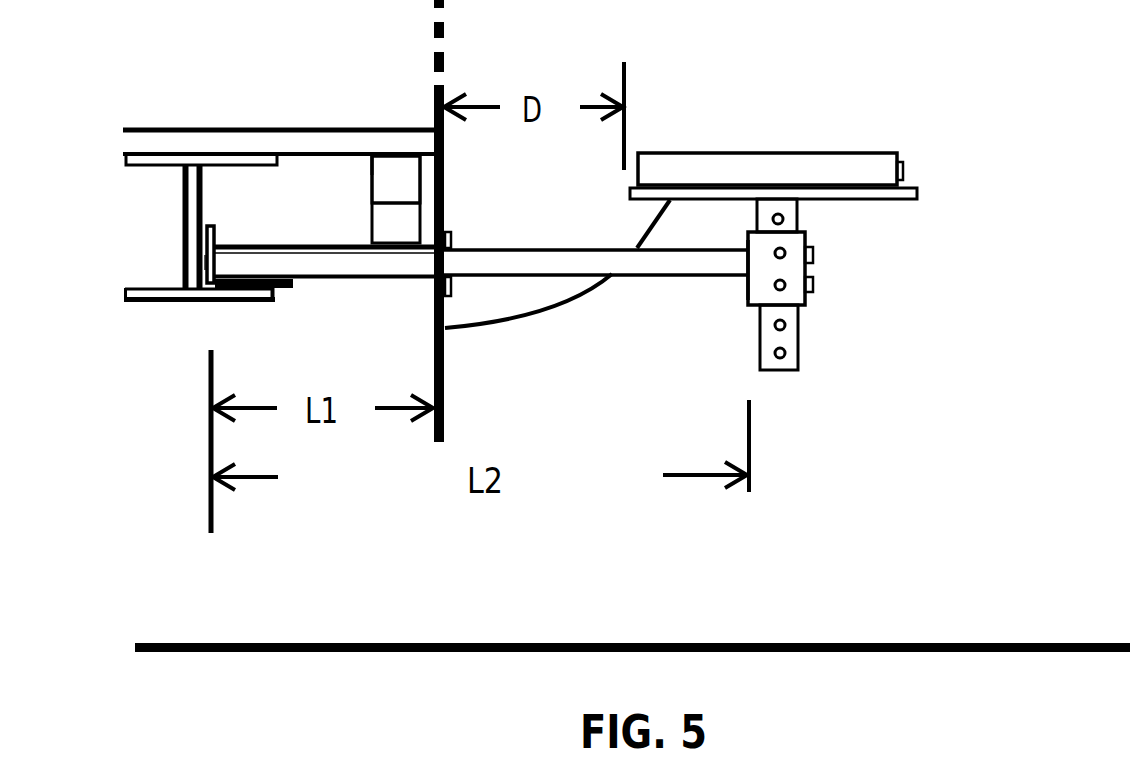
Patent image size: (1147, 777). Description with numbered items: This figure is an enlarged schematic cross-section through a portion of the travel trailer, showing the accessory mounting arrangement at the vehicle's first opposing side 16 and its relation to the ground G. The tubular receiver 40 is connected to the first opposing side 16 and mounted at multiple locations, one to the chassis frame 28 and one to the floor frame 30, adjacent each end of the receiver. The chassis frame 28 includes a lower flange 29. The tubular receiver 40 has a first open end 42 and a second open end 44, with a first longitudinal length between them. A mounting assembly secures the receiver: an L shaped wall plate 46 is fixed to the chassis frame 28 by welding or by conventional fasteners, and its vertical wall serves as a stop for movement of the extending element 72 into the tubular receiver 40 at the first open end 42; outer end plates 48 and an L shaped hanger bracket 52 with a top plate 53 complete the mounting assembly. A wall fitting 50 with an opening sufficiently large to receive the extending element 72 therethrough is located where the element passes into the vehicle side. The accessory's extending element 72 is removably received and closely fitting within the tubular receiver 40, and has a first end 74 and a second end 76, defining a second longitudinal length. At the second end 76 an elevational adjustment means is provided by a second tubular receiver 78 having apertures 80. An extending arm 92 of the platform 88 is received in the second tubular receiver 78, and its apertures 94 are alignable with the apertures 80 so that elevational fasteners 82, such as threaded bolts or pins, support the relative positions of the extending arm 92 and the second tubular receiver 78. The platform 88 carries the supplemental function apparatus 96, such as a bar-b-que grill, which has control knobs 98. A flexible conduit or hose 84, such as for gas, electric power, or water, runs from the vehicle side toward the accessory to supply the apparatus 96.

The first opposing side 16 is at (445, 382).
The chassis frame 28 is at (190, 188).
The lower flange 29 is at (243, 298).
The floor frame 30 is at (303, 133).
The tubular receiver 40 is at (330, 277).
The first open end 42 is at (218, 242).
The second open end 44 is at (428, 287).
The L shaped wall plate 46 is at (208, 262).
The outer end plates 48 is at (387, 227).
The wall fitting 50 is at (452, 233).
The L shaped hanger bracket 52 is at (403, 185).
The top plate 53 is at (269, 125).
The extending element 72 is at (515, 260).
The first end 74 is at (254, 318).
The second end 76 is at (746, 258).
The second tubular receiver 78 is at (765, 250).
The apertures 80 is at (787, 288).
The elevational fasteners 82 is at (813, 256).
The flexible conduit or hose 84 is at (500, 322).
The platform 88 is at (900, 195).
The extending arm 92 is at (792, 338).
The apertures 94 is at (782, 219).
The supplemental function apparatus 96 is at (752, 170).
The control knobs 98 is at (905, 170).
The ground G is at (772, 642).